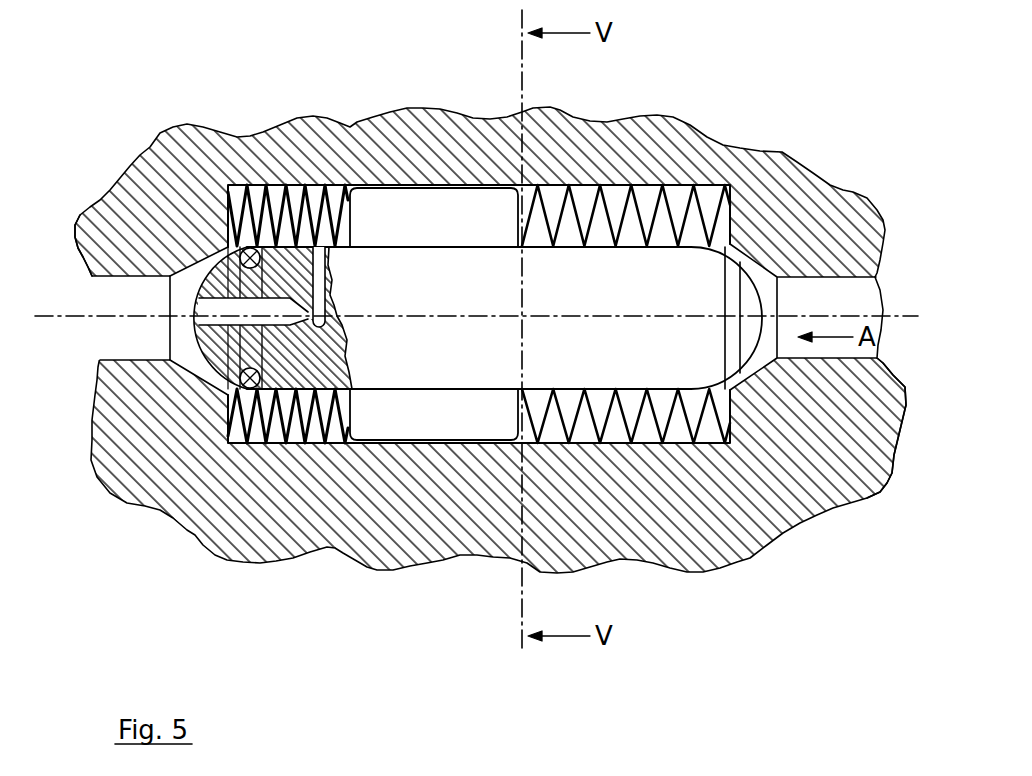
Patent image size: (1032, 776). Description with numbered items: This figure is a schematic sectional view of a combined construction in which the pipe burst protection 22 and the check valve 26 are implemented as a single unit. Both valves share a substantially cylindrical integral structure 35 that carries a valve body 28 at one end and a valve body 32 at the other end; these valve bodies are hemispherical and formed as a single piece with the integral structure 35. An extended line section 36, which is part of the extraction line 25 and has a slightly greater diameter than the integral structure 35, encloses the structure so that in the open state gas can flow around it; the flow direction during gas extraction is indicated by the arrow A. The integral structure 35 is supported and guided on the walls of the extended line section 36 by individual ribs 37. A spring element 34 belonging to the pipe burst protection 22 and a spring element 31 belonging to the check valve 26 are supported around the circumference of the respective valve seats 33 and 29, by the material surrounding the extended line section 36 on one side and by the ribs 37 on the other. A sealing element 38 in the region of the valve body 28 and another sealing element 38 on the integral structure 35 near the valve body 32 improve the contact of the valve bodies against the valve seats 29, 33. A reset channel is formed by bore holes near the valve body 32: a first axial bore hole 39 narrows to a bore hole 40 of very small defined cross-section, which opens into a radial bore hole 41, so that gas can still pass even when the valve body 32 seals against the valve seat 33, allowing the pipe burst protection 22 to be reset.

The pipe burst protection 22 is at (779, 104).
The check valve 26 is at (473, 345).
The extraction line 25 is at (112, 292).
The valve body 28 is at (774, 277).
The valve seat 29 is at (781, 408).
The spring element 31 is at (646, 190).
The valve body 32 is at (97, 252).
The valve seat 33 is at (105, 361).
The spring element 34 is at (266, 443).
The integral structure 35 is at (585, 380).
The extended line section 36 is at (778, 545).
The ribs 37 is at (437, 420).
The sealing element 38 is at (772, 277).
The first axial bore hole 39 is at (220, 290).
The bore hole 40 is at (226, 181).
The radial bore hole 41 is at (285, 182).